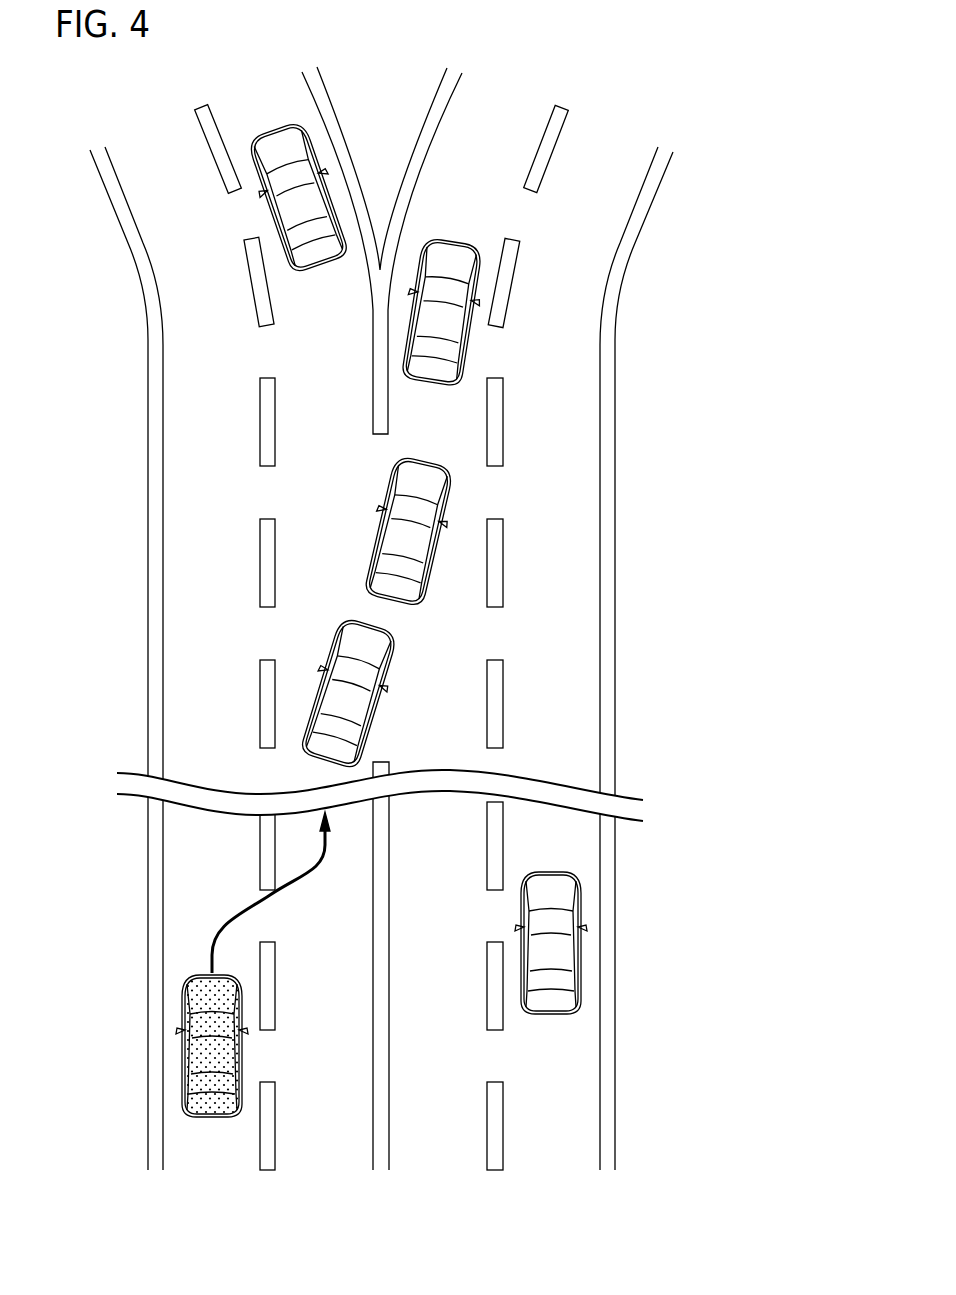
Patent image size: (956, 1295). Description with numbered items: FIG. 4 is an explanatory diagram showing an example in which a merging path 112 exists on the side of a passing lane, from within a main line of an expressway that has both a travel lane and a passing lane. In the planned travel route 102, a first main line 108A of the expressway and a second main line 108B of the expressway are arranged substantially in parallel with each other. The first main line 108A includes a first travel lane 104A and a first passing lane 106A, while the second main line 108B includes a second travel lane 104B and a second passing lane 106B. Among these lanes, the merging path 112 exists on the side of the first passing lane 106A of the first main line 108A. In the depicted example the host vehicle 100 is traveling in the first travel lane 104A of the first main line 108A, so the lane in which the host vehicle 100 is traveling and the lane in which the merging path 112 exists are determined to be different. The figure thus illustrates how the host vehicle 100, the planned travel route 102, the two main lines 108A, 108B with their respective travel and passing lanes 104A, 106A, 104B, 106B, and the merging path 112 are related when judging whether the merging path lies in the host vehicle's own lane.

The host vehicle 100 is at (182, 1057).
The planned travel route 102 is at (410, 102).
The first travel lane 104A is at (205, 890).
The first passing lane 106A is at (307, 840).
The first main line 108A is at (156, 658).
The second travel lane 104B is at (553, 467).
The second passing lane 106B is at (455, 415).
The second main line 108B is at (571, 774).
The merging path 112 is at (375, 510).